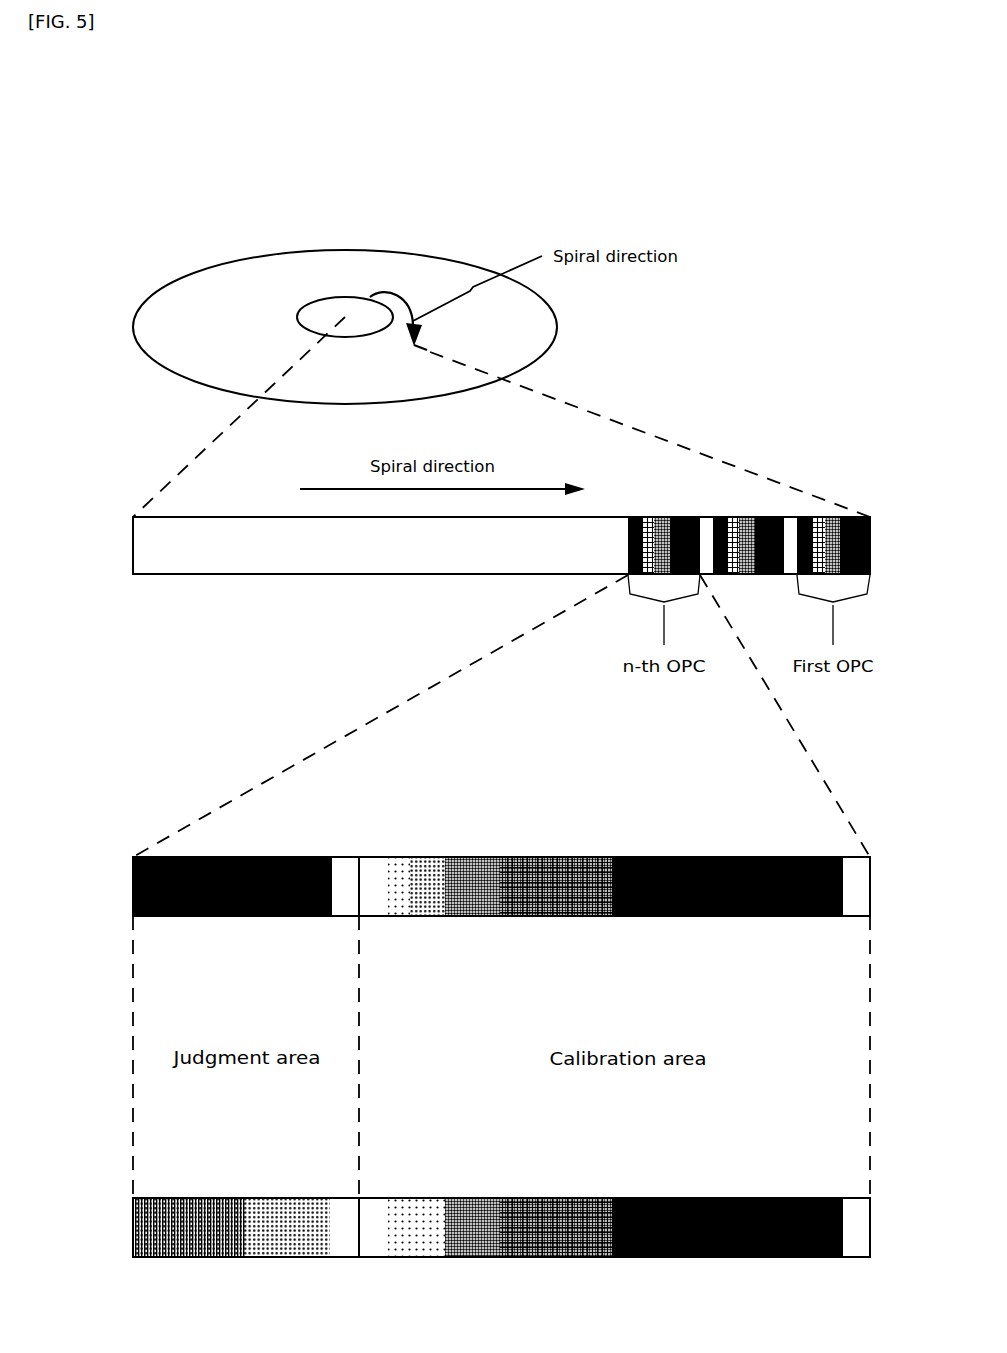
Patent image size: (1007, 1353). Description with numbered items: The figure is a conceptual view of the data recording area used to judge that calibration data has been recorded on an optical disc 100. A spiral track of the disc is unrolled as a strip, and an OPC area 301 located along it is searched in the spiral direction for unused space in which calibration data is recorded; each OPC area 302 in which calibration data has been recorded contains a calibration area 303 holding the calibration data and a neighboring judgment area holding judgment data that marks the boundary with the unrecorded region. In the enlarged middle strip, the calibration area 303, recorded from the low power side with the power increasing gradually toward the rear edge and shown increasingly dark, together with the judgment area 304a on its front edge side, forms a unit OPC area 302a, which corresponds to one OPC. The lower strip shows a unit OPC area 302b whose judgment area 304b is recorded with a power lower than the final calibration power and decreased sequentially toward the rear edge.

The optical disc 100 is at (350, 250).
The OPC area 301 is at (118, 547).
The OPC area 302 is at (670, 517).
The unit OPC area 302a is at (450, 868).
The unit OPC area 302b is at (450, 1209).
The calibration area 303 is at (592, 857).
The judgment area 304a is at (252, 857).
The judgment area 304b is at (252, 1198).